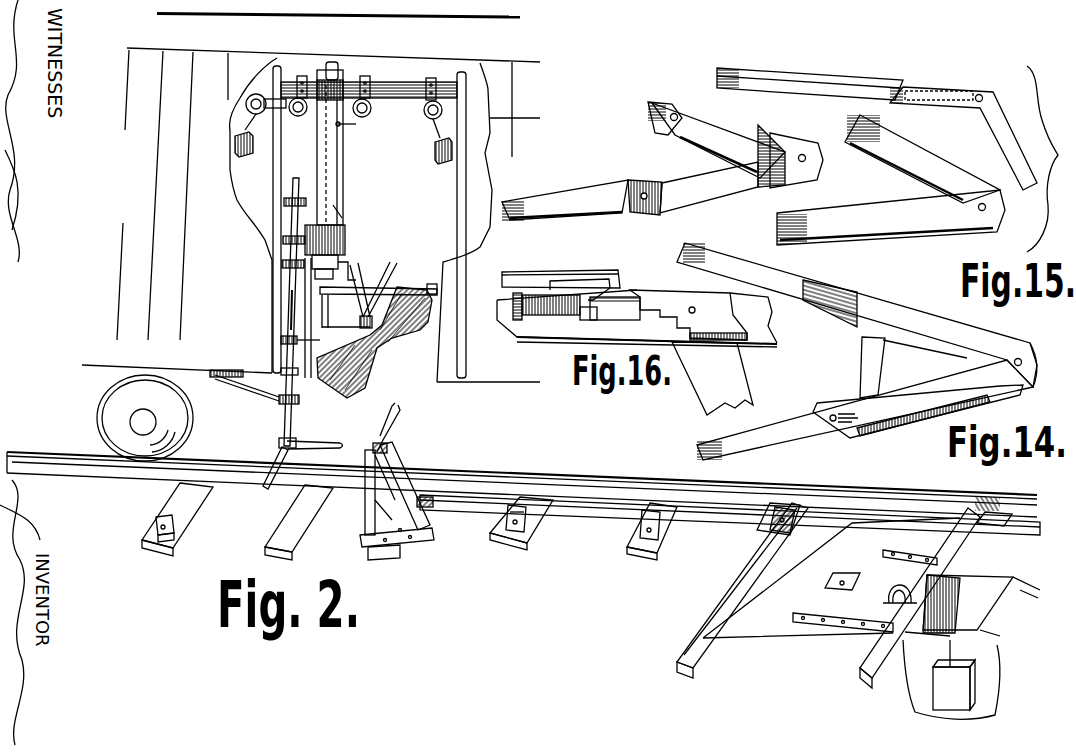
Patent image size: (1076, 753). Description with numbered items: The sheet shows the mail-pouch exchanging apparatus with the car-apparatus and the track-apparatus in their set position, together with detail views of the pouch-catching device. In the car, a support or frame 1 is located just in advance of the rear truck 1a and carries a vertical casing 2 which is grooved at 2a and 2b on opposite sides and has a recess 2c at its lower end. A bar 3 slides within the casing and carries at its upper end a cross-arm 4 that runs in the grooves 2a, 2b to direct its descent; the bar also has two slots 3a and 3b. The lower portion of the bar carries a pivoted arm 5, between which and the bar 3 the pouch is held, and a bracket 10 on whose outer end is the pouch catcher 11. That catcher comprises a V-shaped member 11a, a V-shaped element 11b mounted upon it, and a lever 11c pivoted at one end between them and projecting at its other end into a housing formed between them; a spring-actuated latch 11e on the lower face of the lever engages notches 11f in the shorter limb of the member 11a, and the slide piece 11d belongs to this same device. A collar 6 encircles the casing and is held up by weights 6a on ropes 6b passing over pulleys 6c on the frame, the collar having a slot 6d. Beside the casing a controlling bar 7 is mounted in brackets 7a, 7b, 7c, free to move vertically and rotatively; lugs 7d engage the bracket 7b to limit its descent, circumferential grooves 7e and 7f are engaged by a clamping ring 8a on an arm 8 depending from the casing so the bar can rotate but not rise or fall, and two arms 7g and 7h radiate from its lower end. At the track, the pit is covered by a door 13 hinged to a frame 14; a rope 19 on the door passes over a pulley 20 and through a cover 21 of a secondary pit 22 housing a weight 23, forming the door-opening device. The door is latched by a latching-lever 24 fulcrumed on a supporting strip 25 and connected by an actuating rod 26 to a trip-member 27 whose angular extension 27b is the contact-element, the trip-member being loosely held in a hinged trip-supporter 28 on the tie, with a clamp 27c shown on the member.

In FIG. 2, the support or frame 1 is at (275, 85).
In FIG. 2, the rear truck 1a is at (120, 416).
In FIG. 2, the casing 2 is at (330, 66).
In FIG. 2, the groove 2a is at (345, 158).
In FIG. 2, the groove 2b is at (347, 210).
In FIG. 2, the recess 2c is at (340, 256).
In FIG. 2, the bar 3 is at (339, 74).
In FIG. 2, the slot 3a is at (336, 270).
In FIG. 2, the slot 3b is at (326, 146).
In FIG. 2, the cross-arm 4 is at (358, 124).
In FIG. 2, the arm 5 is at (403, 287).
In FIG. 2, the collar 6 is at (346, 238).
In FIG. 2, the weights 6a is at (246, 158).
In FIG. 2, the ropes 6b is at (238, 132).
In FIG. 2, the pulleys 6c is at (302, 76).
In FIG. 2, the slot 6d is at (288, 264).
In FIG. 2, the bar 7 is at (296, 178).
In FIG. 2, the bracket 7a is at (284, 203).
In FIG. 2, the bracket 7b is at (276, 405).
In FIG. 2, the bracket 7c is at (300, 340).
In FIG. 2, the lugs 7d is at (299, 400).
In FIG. 2, the circumferential groove 7e is at (290, 332).
In FIG. 2, the circumferential groove 7f is at (288, 370).
In FIG. 2, the radiating arm 7g is at (265, 488).
In FIG. 2, the radiating arm 7h is at (330, 444).
In FIG. 2, the arm 8 is at (288, 338).
In FIG. 2, the clamping ring 8a is at (281, 340).
In FIG. 2, the bracket 10 is at (356, 327).
In FIG. 2, the pouch catcher 11 is at (397, 275).
In FIG. 15, the V-shaped member 11a is at (732, 163).
In FIG. 15, the V-shaped element 11b is at (933, 200).
In FIG. 15, the lever 11c is at (814, 78).
In FIG. 14, the slide 11d is at (887, 410).
In FIG. 15, the spring-actuated latch 11e is at (958, 92).
In FIG. 16, the spring-actuated latch 11e is at (620, 276).
In FIG. 15, the notches 11f is at (652, 127).
In FIG. 16, the notches 11f is at (668, 304).
In FIG. 2, the door 13 is at (831, 578).
In FIG. 2, the frame 14 is at (870, 662).
In FIG. 2, the chain or rope 19 is at (875, 578).
In FIG. 2, the pulley 20 is at (886, 593).
In FIG. 2, the cover 21 is at (972, 605).
In FIG. 2, the secondary pit 22 is at (962, 580).
In FIG. 2, the weight 23 is at (951, 679).
In FIG. 2, the latching-lever 24 is at (750, 572).
In FIG. 2, the supporting strip 25 is at (688, 657).
In FIG. 2, the actuating rod 26 is at (587, 510).
In FIG. 2, the trip-member 27 is at (412, 483).
In FIG. 2, the angular extension 27b is at (402, 418).
In FIG. 2, the clamp 27c is at (456, 507).
In FIG. 2, the trip-supporter 28 is at (158, 519).